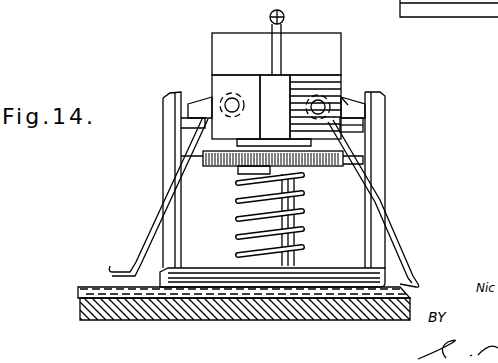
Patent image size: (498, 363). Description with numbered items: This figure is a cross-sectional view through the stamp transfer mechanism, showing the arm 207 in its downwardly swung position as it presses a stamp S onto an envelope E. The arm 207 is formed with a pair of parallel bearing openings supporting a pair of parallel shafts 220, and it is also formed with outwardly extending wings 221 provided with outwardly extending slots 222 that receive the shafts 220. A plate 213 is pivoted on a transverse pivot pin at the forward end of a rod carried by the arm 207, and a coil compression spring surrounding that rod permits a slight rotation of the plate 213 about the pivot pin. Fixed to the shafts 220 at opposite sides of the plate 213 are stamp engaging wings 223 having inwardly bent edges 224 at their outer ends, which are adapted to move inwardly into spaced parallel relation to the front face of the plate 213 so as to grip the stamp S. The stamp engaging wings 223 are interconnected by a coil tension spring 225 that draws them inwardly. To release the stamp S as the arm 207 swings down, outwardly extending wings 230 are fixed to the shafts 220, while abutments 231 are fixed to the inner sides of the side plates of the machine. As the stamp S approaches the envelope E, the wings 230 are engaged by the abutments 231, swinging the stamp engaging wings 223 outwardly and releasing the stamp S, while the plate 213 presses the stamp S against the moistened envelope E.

The arm 207 is at (257, 12).
The plate 213 is at (325, 278).
The parallel shafts 220 is at (233, 98).
The wings 221 is at (333, 87).
The slots 222 is at (341, 100).
The stamp engaging wings 223 is at (152, 214).
The inwardly bent edges 224 is at (112, 276).
The coil tension spring 225 is at (225, 167).
The outwardly extending wings 230 is at (200, 110).
The abutments 231 is at (357, 132).
The stamp S is at (215, 286).
The envelope E is at (141, 321).